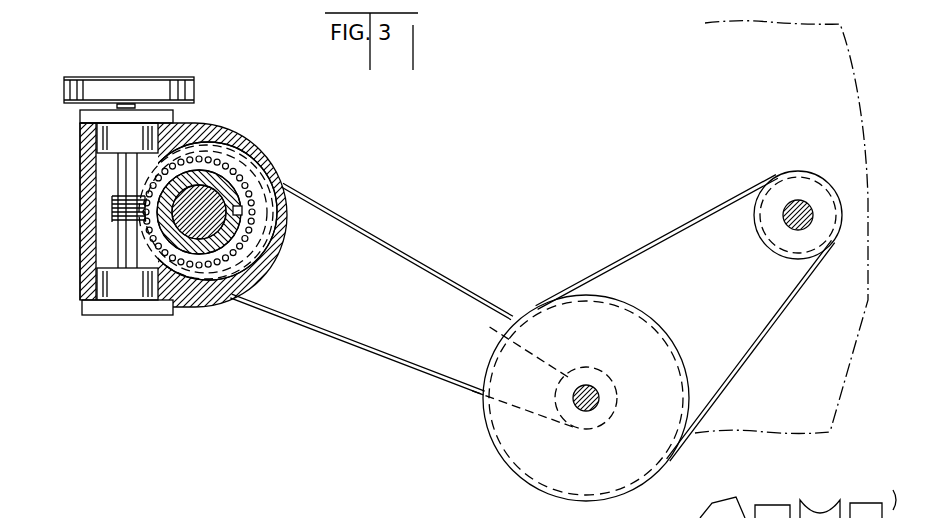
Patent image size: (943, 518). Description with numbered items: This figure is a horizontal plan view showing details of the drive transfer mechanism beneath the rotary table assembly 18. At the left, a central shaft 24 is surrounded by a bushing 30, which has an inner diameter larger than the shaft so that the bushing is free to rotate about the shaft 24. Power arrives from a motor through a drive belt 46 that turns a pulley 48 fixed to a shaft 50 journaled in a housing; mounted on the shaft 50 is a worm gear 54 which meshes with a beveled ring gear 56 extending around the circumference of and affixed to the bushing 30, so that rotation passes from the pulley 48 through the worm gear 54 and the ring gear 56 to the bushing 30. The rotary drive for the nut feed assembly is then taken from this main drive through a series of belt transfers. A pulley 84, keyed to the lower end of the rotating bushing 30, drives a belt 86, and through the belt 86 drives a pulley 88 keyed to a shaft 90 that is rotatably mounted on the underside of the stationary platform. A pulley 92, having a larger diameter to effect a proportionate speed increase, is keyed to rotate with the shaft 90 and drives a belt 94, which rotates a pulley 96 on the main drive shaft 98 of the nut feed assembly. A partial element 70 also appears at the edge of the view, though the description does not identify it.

The rotary table assembly 18 is at (866, 102).
The shaft 24 is at (199, 222).
The bushing 30 is at (208, 187).
The drive belt 46 is at (67, 90).
The pulley 48 is at (113, 75).
The shaft 50 is at (120, 164).
The worm gear 54 is at (115, 203).
The beveled ring gear 56 is at (233, 180).
The rack teeth 70 is at (800, 493).
The pulley 84 is at (283, 229).
The belt 86 is at (358, 348).
The pulley 88 is at (568, 377).
The shaft 90 is at (592, 400).
The pulley 92 is at (660, 360).
The belt 94 is at (672, 234).
The pulley 96 is at (772, 227).
The main drive shaft 98 is at (797, 207).